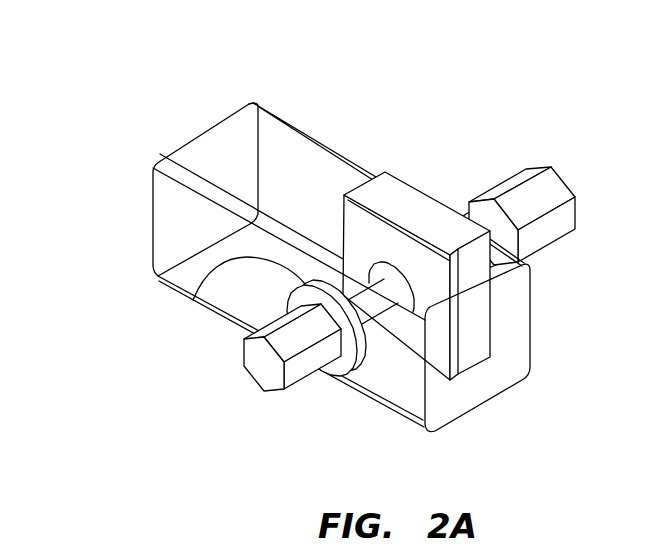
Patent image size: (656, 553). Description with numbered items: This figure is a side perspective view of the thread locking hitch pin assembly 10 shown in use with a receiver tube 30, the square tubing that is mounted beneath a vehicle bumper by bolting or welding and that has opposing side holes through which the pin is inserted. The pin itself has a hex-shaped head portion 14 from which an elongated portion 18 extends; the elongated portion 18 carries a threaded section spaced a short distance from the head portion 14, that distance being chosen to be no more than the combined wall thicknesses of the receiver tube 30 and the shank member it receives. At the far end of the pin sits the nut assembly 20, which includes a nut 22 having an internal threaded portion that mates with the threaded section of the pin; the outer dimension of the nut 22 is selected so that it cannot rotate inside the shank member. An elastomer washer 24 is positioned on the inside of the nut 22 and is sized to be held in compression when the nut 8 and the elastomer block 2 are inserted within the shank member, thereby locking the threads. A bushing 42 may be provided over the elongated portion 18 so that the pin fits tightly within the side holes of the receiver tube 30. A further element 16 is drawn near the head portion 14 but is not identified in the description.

The hitch pin assembly 10 is at (122, 60).
The elastomer block 2 is at (410, 236).
The nut 8 is at (405, 195).
The head portion 14 is at (270, 374).
The bolt head shoulder 16 is at (334, 362).
The elongated portion 18 is at (367, 318).
The nut assembly 20 is at (550, 178).
The nut 22 is at (470, 197).
The elastomer washer 24 is at (193, 298).
The receiver tube 30 is at (214, 142).
The bushing 42 is at (550, 143).